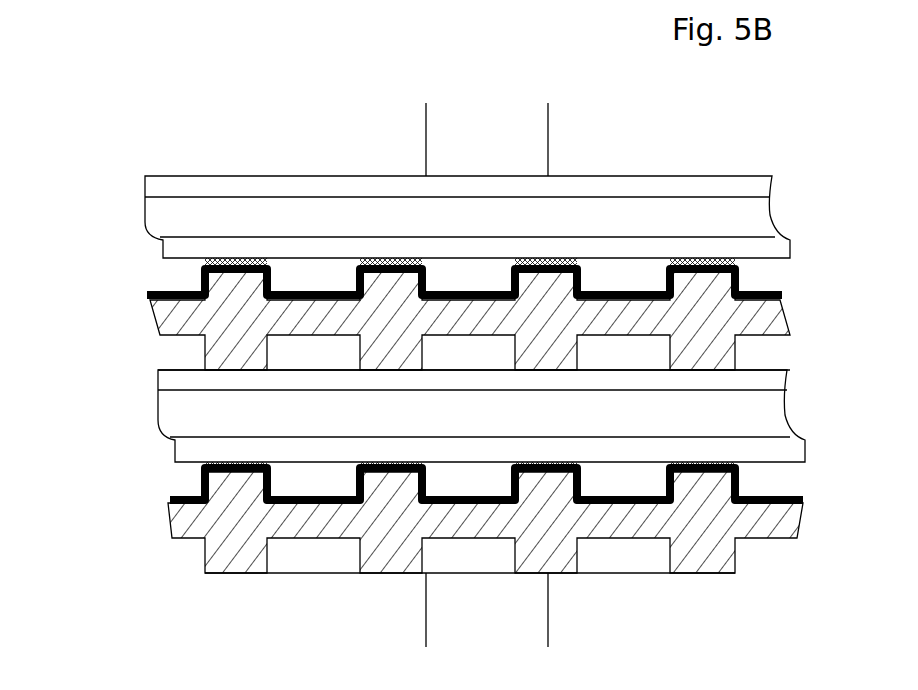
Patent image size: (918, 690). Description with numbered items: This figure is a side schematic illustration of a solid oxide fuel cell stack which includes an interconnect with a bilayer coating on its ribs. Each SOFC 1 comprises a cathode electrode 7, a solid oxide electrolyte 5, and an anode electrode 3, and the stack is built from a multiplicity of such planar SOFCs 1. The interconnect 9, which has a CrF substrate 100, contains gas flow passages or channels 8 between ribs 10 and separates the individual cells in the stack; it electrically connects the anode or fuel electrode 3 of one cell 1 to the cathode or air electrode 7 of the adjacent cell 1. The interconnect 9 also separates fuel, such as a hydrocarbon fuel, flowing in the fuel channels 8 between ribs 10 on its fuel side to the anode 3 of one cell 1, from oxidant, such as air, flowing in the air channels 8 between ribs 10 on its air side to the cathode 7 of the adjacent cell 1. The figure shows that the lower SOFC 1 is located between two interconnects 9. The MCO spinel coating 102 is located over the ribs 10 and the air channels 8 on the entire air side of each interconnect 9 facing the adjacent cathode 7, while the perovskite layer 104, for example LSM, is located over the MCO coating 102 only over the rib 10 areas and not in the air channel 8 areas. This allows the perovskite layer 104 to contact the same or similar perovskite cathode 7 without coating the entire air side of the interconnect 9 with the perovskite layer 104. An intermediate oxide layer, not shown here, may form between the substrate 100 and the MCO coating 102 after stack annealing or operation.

The solid oxide fuel cell 1 is at (810, 173).
The anode electrode 3 is at (437, 280).
The solid oxide electrolyte 5 is at (439, 318).
The cathode electrode 7 is at (446, 346).
The gas flow channels 8 is at (321, 289).
The interconnect 9 is at (810, 273).
The ribs 10 is at (203, 353).
The interconnect substrate 100 is at (188, 317).
The MCO coating 102 is at (433, 384).
The perovskite layer 104 is at (200, 259).